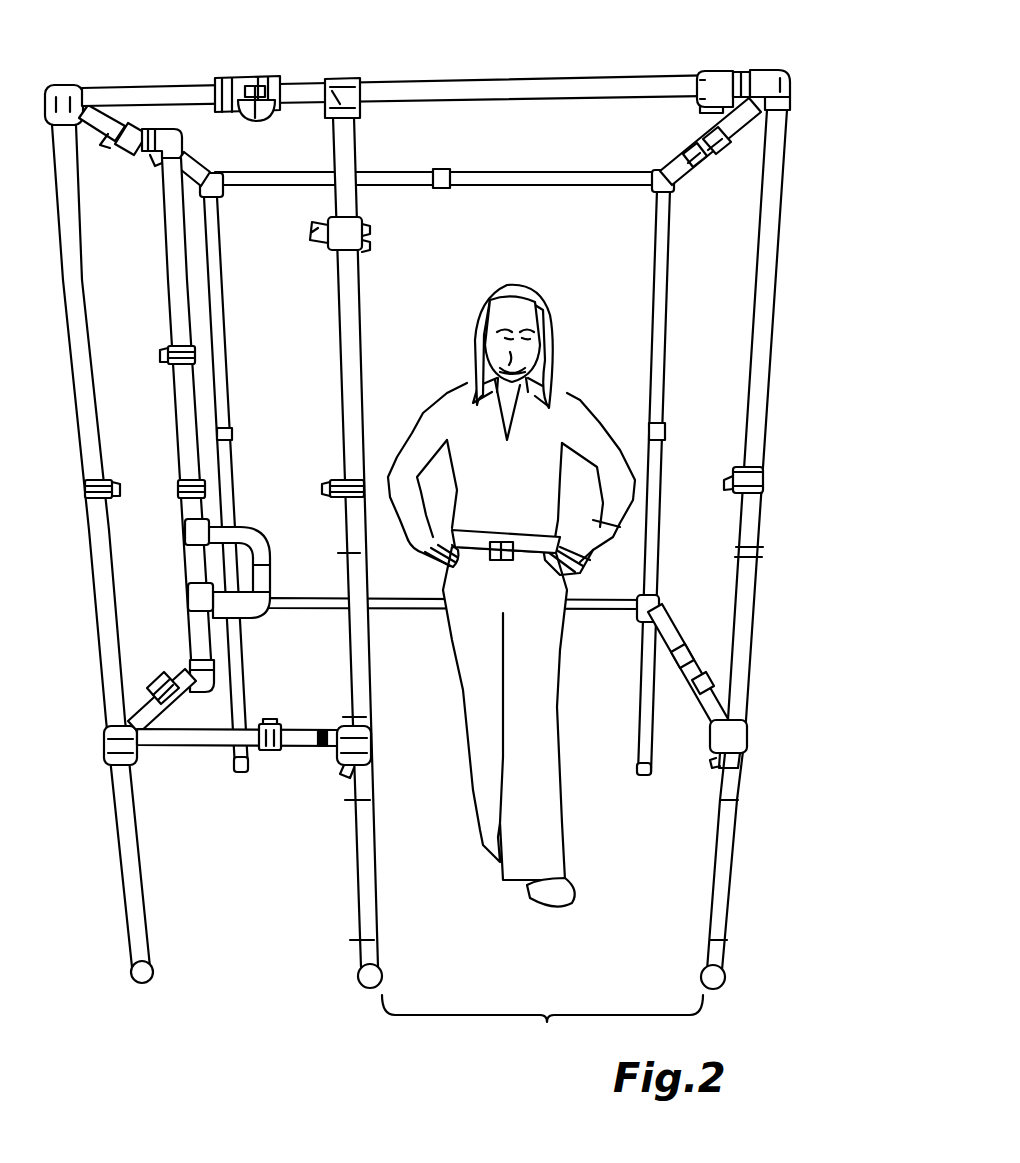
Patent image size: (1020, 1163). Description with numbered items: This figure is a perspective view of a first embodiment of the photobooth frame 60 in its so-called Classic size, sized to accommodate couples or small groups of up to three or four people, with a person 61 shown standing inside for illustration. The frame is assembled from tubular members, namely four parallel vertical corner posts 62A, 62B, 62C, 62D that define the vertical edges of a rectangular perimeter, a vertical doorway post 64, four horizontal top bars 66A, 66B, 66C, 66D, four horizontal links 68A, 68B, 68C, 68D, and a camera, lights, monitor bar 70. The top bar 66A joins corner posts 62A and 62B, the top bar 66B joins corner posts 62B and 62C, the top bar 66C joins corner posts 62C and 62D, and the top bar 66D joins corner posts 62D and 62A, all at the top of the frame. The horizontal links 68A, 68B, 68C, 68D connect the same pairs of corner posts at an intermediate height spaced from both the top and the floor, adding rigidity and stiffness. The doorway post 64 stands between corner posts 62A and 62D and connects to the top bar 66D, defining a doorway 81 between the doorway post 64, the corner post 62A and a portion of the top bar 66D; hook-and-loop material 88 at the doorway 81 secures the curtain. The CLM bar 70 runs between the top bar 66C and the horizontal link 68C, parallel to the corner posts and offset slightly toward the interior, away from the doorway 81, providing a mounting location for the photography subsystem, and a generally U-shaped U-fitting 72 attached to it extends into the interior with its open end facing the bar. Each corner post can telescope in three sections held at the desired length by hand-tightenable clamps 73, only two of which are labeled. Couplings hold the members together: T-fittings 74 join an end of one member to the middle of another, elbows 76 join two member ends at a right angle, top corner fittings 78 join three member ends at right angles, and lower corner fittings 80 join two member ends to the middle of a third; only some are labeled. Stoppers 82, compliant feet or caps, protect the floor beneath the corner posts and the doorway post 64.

The photobooth frame 60 is at (800, 215).
The person 61 is at (560, 400).
The corner post 62A is at (763, 413).
The corner post 62B is at (662, 357).
The corner post 62C is at (213, 313).
The corner post 62D is at (78, 303).
The doorway post 64 is at (360, 295).
The top bar 66A is at (740, 120).
The top bar 66B is at (480, 172).
The top bar 66C is at (215, 168).
The top bar 66D is at (458, 85).
The horizontal link 68A is at (673, 635).
The horizontal link 68B is at (305, 598).
The horizontal link 68C is at (143, 697).
The horizontal link 68D is at (207, 745).
The camera, lights, monitor (CLM) bar 70 is at (187, 417).
The U-fitting 72 is at (240, 530).
The hand-tightenable clamp 73 is at (757, 487).
The T-fitting 74 is at (365, 745).
The elbow 76 is at (200, 683).
The top corner fitting 78 is at (783, 70).
The lower corner fitting 80 is at (112, 742).
The doorway 81 is at (542, 1024).
The stopper 82 is at (150, 968).
The hook-and-loop material 88 is at (627, 85).